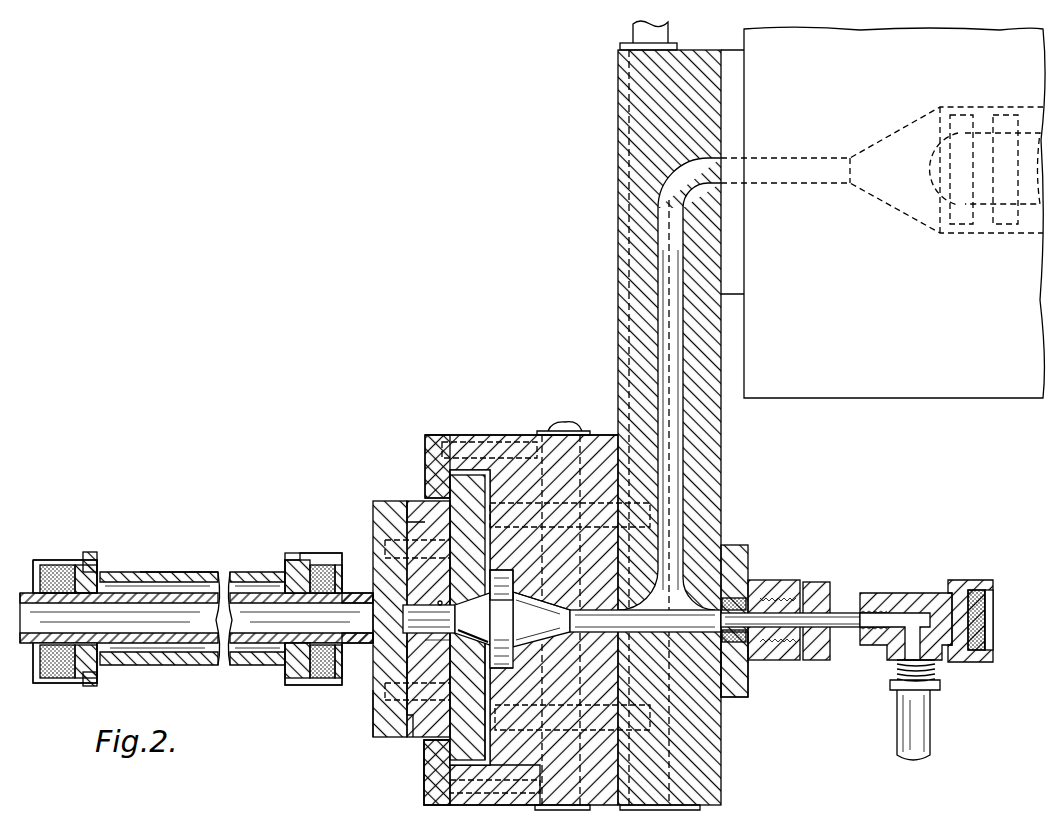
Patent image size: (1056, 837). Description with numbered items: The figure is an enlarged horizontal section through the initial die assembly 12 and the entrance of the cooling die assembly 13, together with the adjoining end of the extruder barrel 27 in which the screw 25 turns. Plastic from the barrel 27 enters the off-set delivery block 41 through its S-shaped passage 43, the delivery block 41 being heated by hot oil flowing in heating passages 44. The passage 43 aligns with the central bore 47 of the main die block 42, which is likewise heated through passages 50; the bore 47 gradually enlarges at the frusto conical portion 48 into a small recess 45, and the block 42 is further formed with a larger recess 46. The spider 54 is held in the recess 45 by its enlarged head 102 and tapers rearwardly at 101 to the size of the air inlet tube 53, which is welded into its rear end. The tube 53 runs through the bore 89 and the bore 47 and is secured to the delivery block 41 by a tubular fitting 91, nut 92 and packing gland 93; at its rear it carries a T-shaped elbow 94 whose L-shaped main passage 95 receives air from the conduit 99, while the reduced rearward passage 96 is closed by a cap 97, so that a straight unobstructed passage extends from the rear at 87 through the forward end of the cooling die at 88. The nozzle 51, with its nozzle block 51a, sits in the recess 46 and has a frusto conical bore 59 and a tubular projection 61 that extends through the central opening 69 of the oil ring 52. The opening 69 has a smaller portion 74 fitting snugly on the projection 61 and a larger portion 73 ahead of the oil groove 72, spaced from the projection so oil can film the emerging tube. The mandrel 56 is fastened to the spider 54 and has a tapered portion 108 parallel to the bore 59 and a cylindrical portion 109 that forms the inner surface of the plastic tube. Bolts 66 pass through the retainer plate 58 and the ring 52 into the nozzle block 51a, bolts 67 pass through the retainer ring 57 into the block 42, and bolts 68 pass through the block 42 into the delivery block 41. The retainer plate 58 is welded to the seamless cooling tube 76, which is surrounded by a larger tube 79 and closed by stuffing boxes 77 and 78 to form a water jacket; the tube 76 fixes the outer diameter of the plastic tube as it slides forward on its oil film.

The initial die assembly 12 is at (478, 440).
The cooling die assembly 13 is at (128, 572).
The screw 25 is at (962, 118).
The barrel 27 is at (1010, 383).
The off-set delivery block 41 is at (623, 157).
The main die block 42 is at (527, 440).
The S-shaped passage 43 is at (672, 257).
The heating passages 44 is at (637, 190).
The small recess 45 is at (505, 570).
The large recess 46 is at (465, 470).
The central bore 47 is at (572, 612).
The frusto conical portion 48 is at (514, 601).
The heating passages 50 is at (575, 455).
The nozzle 51 is at (412, 725).
The nozzle block 51a is at (450, 483).
The oil ring 52 is at (395, 650).
The air inlet tube 53 is at (838, 612).
The spider 54 is at (548, 632).
The mandrel 56 is at (472, 605).
The retainer ring 57 is at (424, 792).
The retainer plate 58 is at (373, 728).
The frusto conical bore 59 is at (372, 700).
The tubular projection 61 is at (405, 605).
The bolts 66 is at (398, 535).
The bolts 67 is at (435, 450).
The bolts 68 is at (572, 526).
The central opening 69 is at (440, 600).
The oil groove 72 is at (415, 640).
The larger diameter portion 73 is at (385, 595).
The smaller diameter portion 74 is at (437, 640).
The cooling tube 76 is at (25, 593).
The stuffing box 77 is at (84, 555).
The stuffing box 78 is at (290, 560).
The larger tube 79 is at (208, 572).
The rear end of straight line passage 87 is at (993, 592).
The forward end of straight line passage 88 is at (38, 660).
The bore 89 is at (722, 560).
The tubular fitting 91 is at (742, 680).
The nut 92 is at (825, 660).
The packing gland 93 is at (740, 600).
The T-shaped elbow 94 is at (935, 668).
The main passage 95 is at (915, 610).
The supplementary reduced passage 96 is at (958, 600).
The cap 97 is at (993, 660).
The conduit 99 is at (897, 718).
The flared tapered portion 101 is at (520, 596).
The enlarged head 102 is at (515, 660).
The tapered portion 108 is at (474, 650).
The cylindrical portion 109 is at (405, 612).